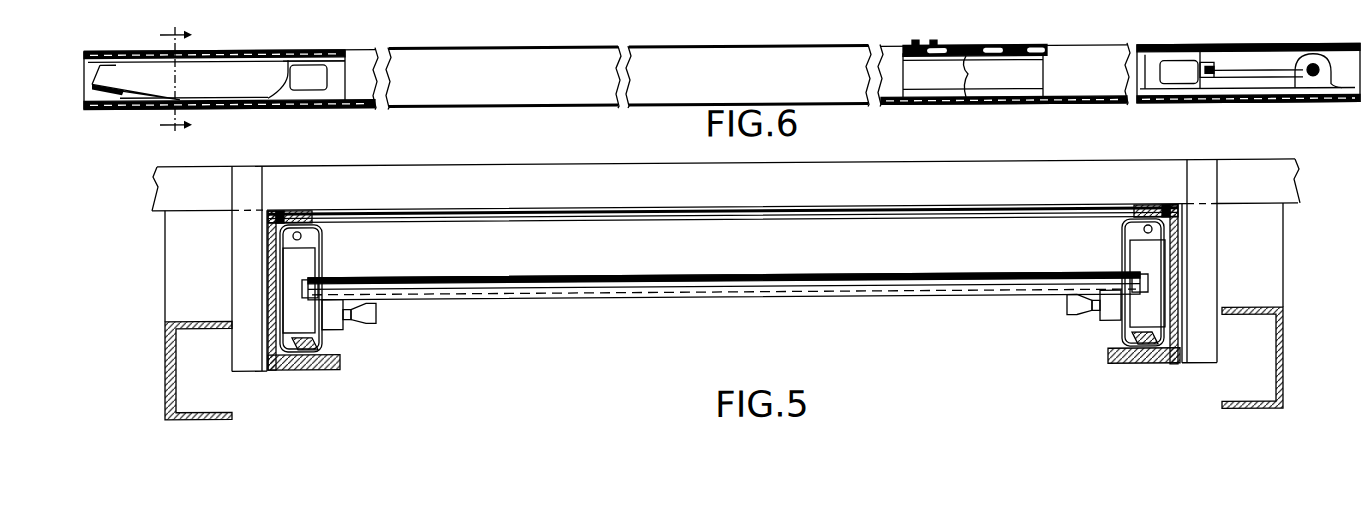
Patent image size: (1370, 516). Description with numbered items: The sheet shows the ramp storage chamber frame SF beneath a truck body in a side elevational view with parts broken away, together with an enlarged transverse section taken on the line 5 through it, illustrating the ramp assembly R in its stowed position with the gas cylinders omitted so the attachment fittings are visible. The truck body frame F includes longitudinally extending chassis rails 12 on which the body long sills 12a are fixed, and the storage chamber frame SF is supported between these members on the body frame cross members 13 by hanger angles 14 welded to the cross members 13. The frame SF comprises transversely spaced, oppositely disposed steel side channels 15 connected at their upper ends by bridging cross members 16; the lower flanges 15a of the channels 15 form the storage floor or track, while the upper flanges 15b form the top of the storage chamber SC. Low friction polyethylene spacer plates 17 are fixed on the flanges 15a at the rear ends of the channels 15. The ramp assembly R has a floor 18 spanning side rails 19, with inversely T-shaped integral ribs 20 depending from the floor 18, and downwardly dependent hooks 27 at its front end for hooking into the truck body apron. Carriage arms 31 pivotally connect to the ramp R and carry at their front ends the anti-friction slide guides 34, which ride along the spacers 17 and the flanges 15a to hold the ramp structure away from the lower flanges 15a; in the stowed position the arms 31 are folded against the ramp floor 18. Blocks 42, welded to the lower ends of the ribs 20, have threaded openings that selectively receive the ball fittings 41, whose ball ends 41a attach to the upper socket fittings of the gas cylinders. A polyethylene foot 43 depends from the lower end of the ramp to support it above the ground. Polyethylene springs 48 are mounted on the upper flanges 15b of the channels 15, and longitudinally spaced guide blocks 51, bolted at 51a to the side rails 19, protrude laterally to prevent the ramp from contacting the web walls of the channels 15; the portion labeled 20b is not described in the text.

In FIG. 6, the section line 5 is at (185, 80).
In FIG. 5, the chassis rail 12 is at (168, 356).
In FIG. 5, the body long sill 12a is at (172, 229).
In FIG. 5, the body frame cross member 13 is at (160, 203).
In FIG. 5, the hanger angle 14 is at (236, 230).
In FIG. 6, the side channel 15 is at (813, 54).
In FIG. 5, the side channel 15 is at (268, 249).
In FIG. 5, the lower flange 15a is at (326, 373).
In FIG. 5, the upper flange 15b is at (304, 214).
In FIG. 6, the bridging cross member 16 is at (137, 52).
In FIG. 5, the bridging cross member 16 is at (553, 222).
In FIG. 6, the spacer plate 17 is at (152, 80).
In FIG. 5, the spacer plate 17 is at (290, 373).
In FIG. 5, the floor 18 is at (776, 280).
In FIG. 5, the side rail 19 is at (322, 242).
In FIG. 5, the rib 20 is at (798, 302).
In FIG. 6, the rail end portion 20b is at (288, 62).
In FIG. 5, the rail end portion 20b is at (1106, 364).
In FIG. 6, the hook 27 is at (1220, 72).
In FIG. 6, the arm 31 is at (1262, 70).
In FIG. 6, the slide guide 34 is at (1313, 88).
In FIG. 5, the ball fitting 41 is at (392, 316).
In FIG. 5, the ball end 41a is at (372, 325).
In FIG. 5, the block 42 is at (332, 316).
In FIG. 6, the foot 43 is at (103, 93).
In FIG. 6, the spring 48 is at (966, 103).
In FIG. 5, the spring 48 is at (290, 213).
In FIG. 6, the guide block 51 is at (303, 90).
In FIG. 5, the guide block 51 is at (287, 267).
In FIG. 5, the bolt 51a is at (268, 310).
In FIG. 5, the truck body frame F is at (158, 261).
In FIG. 6, the ramp assembly R is at (260, 62).
In FIG. 5, the ramp assembly R is at (690, 272).
In FIG. 6, the storage chamber SC is at (913, 46).
In FIG. 5, the storage chamber SC is at (981, 224).
In FIG. 6, the storage chamber frame SF is at (542, 46).